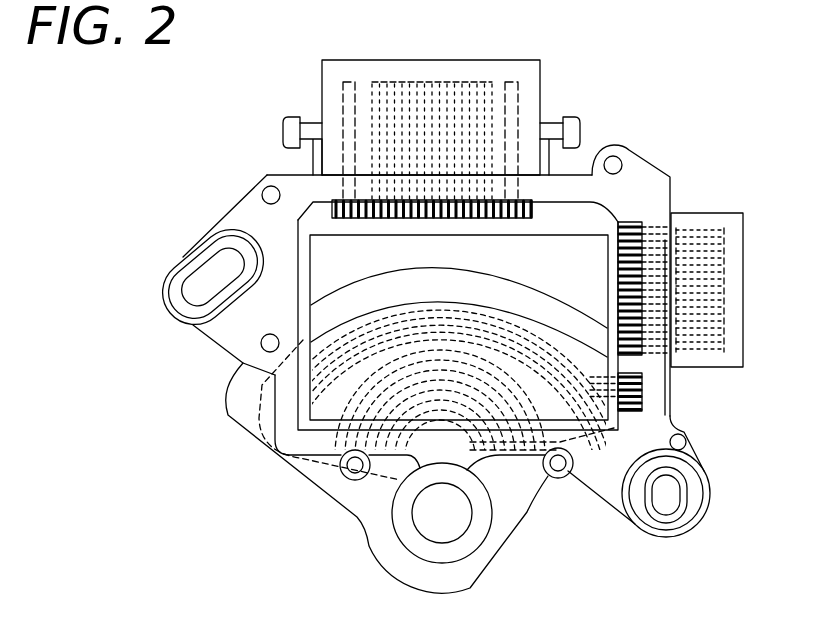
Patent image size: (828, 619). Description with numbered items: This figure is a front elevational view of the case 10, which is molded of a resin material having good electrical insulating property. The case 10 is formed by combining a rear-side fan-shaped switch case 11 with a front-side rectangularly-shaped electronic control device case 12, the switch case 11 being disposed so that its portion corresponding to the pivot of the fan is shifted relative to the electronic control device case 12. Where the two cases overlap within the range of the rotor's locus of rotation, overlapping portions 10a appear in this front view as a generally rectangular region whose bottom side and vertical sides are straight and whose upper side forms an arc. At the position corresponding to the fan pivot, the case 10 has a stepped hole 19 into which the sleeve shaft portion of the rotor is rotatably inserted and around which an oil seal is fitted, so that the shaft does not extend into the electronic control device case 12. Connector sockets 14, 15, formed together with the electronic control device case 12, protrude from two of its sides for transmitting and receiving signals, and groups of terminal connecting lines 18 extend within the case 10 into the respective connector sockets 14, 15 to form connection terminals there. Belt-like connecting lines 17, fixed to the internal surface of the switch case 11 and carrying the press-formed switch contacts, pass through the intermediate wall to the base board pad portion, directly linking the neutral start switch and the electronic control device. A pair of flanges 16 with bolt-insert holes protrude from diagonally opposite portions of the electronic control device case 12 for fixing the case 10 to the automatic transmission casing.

The case 10 is at (655, 166).
The overlapping portions 10a is at (480, 307).
The switch case 11 is at (338, 490).
The electronic control device case 12 is at (655, 397).
The connector socket 14 is at (542, 83).
The connector socket 15 is at (737, 303).
The flanges 16 is at (235, 343).
The connecting lines 17 is at (640, 405).
The terminal connecting lines 18 is at (398, 217).
The stepped hole 19 is at (448, 542).